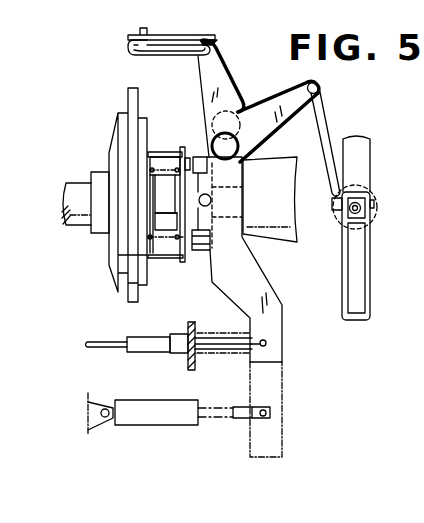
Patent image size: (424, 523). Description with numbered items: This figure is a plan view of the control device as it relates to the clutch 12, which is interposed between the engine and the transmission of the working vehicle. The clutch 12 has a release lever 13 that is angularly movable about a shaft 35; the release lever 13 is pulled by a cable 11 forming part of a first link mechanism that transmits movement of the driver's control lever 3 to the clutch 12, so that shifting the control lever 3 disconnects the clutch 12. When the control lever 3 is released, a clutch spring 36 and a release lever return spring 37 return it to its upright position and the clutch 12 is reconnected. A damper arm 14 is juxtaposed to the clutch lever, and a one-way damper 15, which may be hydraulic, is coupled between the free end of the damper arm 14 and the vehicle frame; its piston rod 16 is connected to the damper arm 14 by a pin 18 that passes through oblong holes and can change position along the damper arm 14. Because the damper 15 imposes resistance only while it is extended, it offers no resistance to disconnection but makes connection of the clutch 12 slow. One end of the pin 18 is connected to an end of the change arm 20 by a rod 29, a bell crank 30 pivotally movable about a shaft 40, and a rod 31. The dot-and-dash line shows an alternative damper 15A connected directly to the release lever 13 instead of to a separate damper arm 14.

The control lever 3 is at (423, 331).
The cable 11 is at (98, 348).
The clutch 12 is at (114, 267).
The release lever 13 is at (248, 277).
The damper arm 14 is at (357, 162).
The one-way damper 15 is at (372, 221).
The damper 15A is at (182, 420).
The piston rod 16 is at (352, 214).
The pin 18 is at (374, 204).
The change arm 20 is at (167, 34).
The rod 29 is at (172, 56).
The bell crank 30 is at (216, 79).
The rod 31 is at (324, 120).
The shaft 35 is at (224, 126).
The clutch spring 36 is at (160, 247).
The release lever return spring 37 is at (228, 330).
The shaft 40 is at (235, 146).